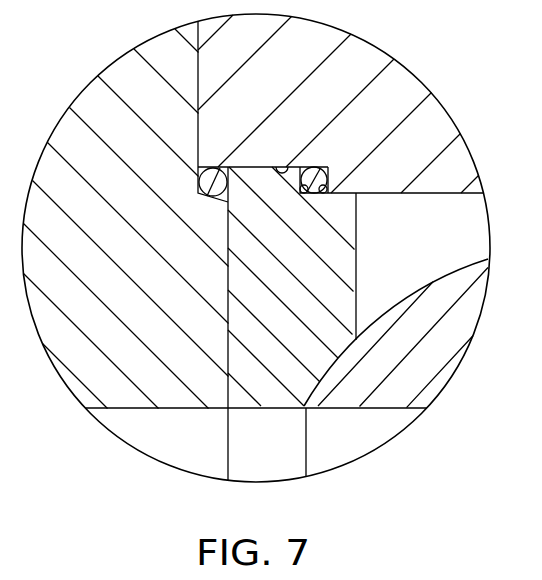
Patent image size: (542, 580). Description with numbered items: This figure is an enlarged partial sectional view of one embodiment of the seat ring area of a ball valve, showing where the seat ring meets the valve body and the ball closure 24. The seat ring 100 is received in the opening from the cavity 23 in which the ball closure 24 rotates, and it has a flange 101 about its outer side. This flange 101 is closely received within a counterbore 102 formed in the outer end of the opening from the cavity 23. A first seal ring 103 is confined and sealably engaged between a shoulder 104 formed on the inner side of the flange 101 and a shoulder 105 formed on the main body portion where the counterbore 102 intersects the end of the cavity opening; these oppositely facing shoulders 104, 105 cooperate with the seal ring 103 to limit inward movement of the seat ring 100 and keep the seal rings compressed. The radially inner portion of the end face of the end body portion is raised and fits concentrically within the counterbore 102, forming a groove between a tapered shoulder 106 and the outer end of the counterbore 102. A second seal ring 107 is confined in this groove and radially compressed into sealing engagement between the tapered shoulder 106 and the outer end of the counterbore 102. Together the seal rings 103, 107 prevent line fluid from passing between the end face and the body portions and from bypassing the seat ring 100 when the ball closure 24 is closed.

The cavity 23 is at (461, 194).
The ball closure 24 is at (396, 312).
The seat ring 100 is at (228, 248).
The flange 101 is at (258, 167).
The counterbore 102 is at (287, 167).
The first seal ring 103 is at (327, 169).
The shoulder 104 is at (309, 195).
The shoulder 105 is at (324, 195).
The tapered shoulder 106 is at (219, 167).
The second seal ring 107 is at (199, 181).